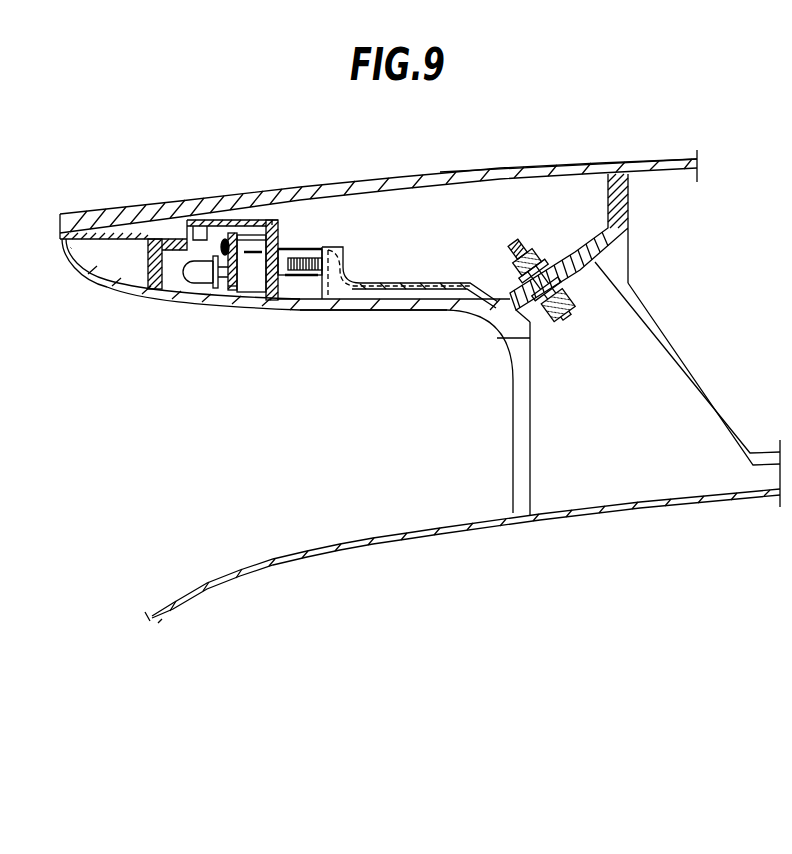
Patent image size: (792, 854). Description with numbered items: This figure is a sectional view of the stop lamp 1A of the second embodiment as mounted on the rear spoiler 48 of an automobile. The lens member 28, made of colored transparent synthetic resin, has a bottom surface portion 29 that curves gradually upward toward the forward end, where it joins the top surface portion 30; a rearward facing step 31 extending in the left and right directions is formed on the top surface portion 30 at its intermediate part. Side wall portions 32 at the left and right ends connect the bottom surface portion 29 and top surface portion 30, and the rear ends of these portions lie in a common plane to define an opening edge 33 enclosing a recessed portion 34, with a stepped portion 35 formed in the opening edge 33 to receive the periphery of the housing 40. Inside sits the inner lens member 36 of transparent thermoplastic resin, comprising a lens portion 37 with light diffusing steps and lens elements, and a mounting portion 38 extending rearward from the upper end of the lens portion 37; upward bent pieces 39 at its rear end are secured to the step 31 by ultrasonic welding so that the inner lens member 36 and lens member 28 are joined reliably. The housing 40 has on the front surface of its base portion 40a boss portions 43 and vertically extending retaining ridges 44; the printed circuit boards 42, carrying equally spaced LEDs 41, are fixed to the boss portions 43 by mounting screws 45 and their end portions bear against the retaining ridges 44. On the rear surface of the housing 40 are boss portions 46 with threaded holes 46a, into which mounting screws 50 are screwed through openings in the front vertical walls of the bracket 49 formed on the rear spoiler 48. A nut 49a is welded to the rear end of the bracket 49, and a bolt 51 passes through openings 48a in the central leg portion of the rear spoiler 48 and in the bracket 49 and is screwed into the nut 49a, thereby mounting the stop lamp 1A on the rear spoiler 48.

The stop lamp 1A is at (131, 400).
The lens member 28 is at (133, 305).
The bottom surface portion 29 is at (205, 284).
The top surface portion 30 is at (103, 217).
The step 31 is at (207, 226).
The side wall portion 32 is at (88, 258).
The opening edge 33 is at (275, 223).
The recessed portion 34 is at (262, 250).
The stepped portion 35 is at (277, 231).
The inner lens member 36 is at (122, 293).
The lens portion 37 is at (155, 290).
The mounting portion 38 is at (185, 235).
The upward bent piece 39 is at (197, 220).
The housing 40 is at (281, 240).
The base portion 40a is at (292, 232).
The LED 41 is at (196, 283).
The printed circuit board 42 is at (233, 290).
The boss portion 43 is at (252, 236).
The retaining ridge 44 is at (254, 288).
The mounting screw 45 is at (226, 238).
The boss portion 46 is at (324, 247).
The threaded hole 46a is at (310, 268).
The rear spoiler 48 is at (462, 180).
The opening 48a is at (542, 318).
The bracket 49 is at (428, 300).
The nut 49a is at (542, 262).
The mounting screw 50 is at (350, 253).
The bolt 51 is at (575, 318).